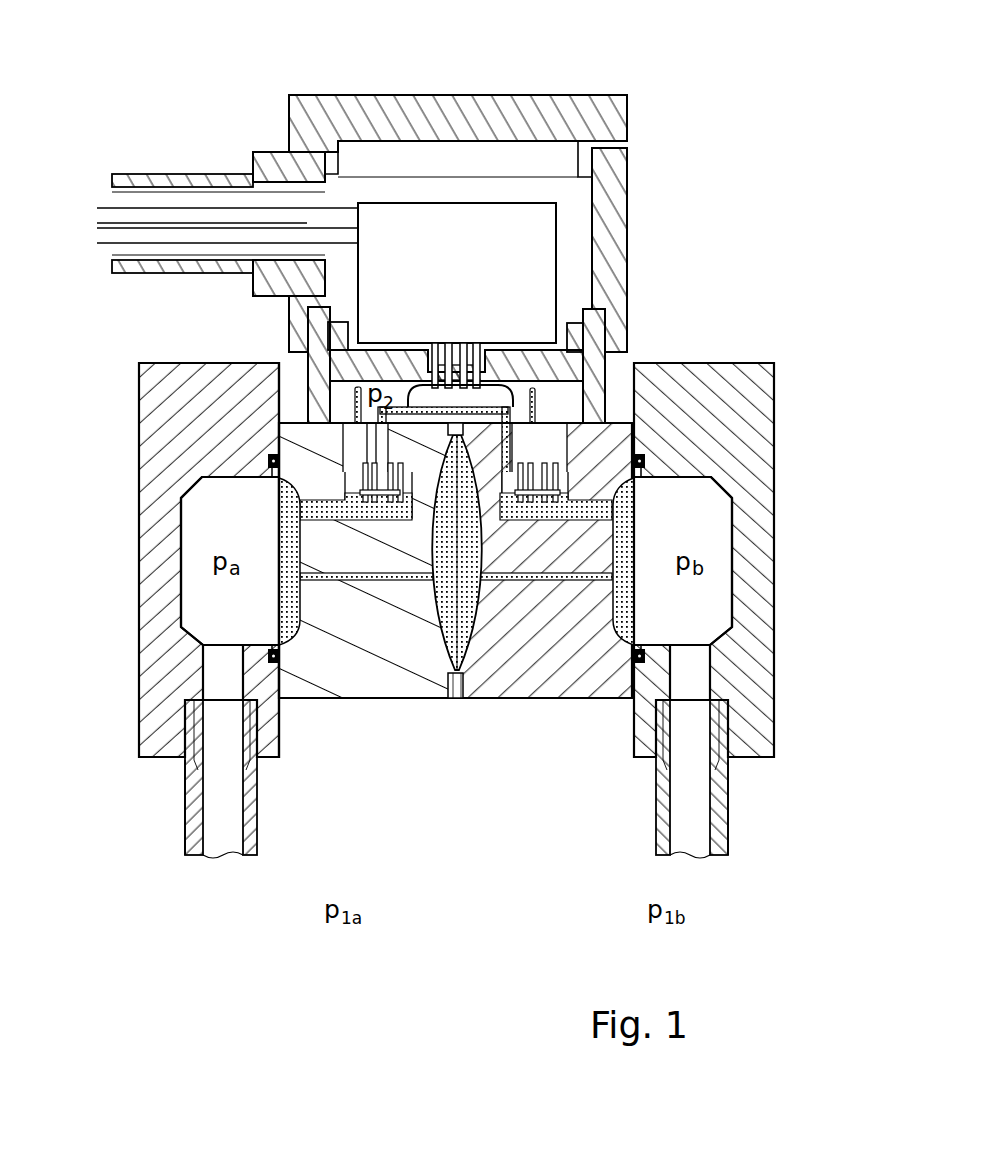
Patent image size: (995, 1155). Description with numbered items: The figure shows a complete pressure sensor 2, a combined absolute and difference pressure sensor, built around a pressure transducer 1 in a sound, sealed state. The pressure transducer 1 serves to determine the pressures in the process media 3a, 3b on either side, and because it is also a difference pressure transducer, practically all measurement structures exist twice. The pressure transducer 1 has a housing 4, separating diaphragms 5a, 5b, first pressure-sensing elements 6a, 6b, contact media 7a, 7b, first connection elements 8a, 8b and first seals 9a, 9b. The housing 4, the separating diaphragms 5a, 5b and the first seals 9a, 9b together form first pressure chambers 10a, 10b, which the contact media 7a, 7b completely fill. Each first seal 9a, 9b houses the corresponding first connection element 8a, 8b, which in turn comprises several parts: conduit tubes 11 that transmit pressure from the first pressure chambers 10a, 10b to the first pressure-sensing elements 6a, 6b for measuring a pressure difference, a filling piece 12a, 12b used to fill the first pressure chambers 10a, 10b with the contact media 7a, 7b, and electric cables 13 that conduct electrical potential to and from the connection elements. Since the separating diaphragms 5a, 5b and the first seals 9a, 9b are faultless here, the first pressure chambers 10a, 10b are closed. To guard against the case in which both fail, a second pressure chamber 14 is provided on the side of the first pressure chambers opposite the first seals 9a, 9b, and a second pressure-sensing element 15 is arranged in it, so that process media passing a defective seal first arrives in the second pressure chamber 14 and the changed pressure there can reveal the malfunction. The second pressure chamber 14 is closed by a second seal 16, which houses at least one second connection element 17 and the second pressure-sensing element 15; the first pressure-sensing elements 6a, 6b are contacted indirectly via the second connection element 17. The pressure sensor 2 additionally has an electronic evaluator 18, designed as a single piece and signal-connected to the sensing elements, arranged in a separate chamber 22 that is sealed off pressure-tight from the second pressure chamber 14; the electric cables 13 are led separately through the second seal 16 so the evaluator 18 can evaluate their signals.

The pressure transducer 1 is at (409, 810).
The pressure sensor 2 is at (143, 833).
The process media 3a is at (215, 590).
The process media 3b is at (698, 592).
The housing 4 is at (517, 680).
The separating diaphragm 5a is at (200, 633).
The separating diaphragm 5b is at (714, 636).
The first pressure-sensing element 6a is at (373, 517).
The first pressure-sensing element 6b is at (527, 523).
The contact media 7a is at (292, 640).
The contact media 7b is at (620, 600).
The first connection element 8a is at (348, 452).
The first connection element 8b is at (566, 451).
The first seal 9a is at (355, 465).
The first seal 9b is at (560, 470).
The first pressure chamber 10a is at (253, 842).
The first pressure chamber 10b is at (655, 842).
The conduit tubes 11 is at (355, 440).
The filling piece 12a is at (308, 381).
The filling piece 12b is at (606, 352).
The electric cables 13 is at (400, 348).
The second pressure chamber 14 is at (600, 375).
The second pressure-sensing element 15 is at (505, 387).
The second seal 16 is at (515, 385).
The second connection element 17 is at (466, 345).
The electronic evaluator 18 is at (385, 220).
The separate chamber 22 is at (458, 157).